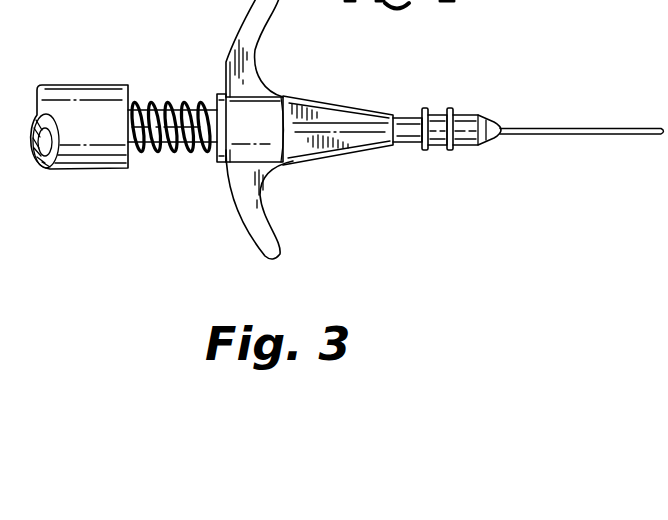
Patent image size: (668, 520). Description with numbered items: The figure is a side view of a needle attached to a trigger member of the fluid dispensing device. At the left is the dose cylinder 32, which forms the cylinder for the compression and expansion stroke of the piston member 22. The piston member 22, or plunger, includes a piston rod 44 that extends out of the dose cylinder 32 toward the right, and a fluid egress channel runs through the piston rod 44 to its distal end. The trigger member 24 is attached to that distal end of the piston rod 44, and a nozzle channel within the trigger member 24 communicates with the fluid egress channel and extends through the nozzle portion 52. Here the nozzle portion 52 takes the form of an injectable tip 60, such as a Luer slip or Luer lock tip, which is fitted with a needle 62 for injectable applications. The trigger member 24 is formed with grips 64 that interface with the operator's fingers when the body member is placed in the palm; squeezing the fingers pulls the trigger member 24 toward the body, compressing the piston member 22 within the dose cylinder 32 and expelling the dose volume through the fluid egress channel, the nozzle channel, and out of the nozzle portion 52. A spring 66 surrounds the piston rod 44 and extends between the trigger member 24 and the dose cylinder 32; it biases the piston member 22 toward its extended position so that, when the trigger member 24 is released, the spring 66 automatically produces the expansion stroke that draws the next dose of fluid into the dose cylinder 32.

The piston member 22 is at (168, 58).
The trigger member 24 is at (408, 190).
The dose cylinder 32 is at (93, 152).
The piston rod 44 is at (167, 133).
The nozzle portion 52 is at (378, 96).
The injectable tip 60 is at (410, 139).
The needle 62 is at (577, 129).
The grips 64 is at (260, 62).
The spring 66 is at (204, 151).